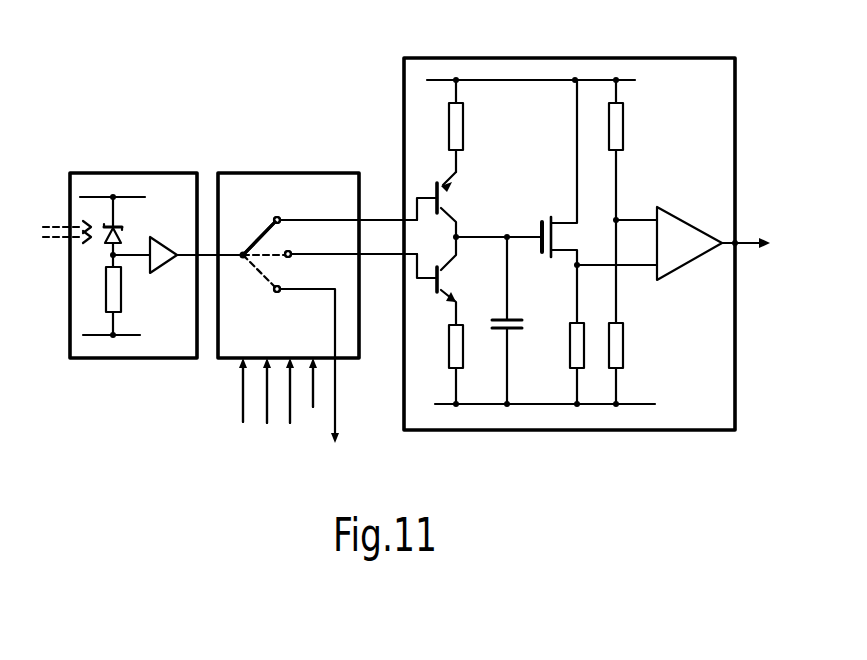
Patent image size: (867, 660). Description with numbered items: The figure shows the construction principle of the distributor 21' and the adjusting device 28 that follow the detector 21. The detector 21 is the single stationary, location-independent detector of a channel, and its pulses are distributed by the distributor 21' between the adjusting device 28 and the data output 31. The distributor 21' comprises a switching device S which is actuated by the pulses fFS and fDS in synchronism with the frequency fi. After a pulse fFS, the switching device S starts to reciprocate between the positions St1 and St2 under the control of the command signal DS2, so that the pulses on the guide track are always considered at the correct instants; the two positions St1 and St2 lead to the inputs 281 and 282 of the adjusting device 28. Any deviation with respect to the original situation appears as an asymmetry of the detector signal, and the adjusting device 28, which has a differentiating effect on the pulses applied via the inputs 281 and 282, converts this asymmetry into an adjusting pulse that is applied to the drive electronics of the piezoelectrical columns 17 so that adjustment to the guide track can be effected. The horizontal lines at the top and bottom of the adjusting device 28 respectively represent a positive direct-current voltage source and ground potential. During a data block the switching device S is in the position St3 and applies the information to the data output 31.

The detector 21 is at (143, 245).
The distributor 21' is at (288, 278).
The input of the adjusting device 281 is at (378, 210).
The input of the adjusting device 282 is at (379, 261).
The adjusting device 28 is at (597, 57).
The data output 31 is at (339, 441).
The piezoelectrical columns 17 is at (740, 242).
The switching device S is at (272, 218).
The switch position St1 is at (292, 216).
The switch position St2 is at (296, 245).
The switch position St3 is at (290, 288).
The guide track pulse fFS is at (243, 422).
The data pulse fDS is at (267, 423).
The synchronization frequency fi is at (290, 423).
The command signal DS2 is at (313, 407).